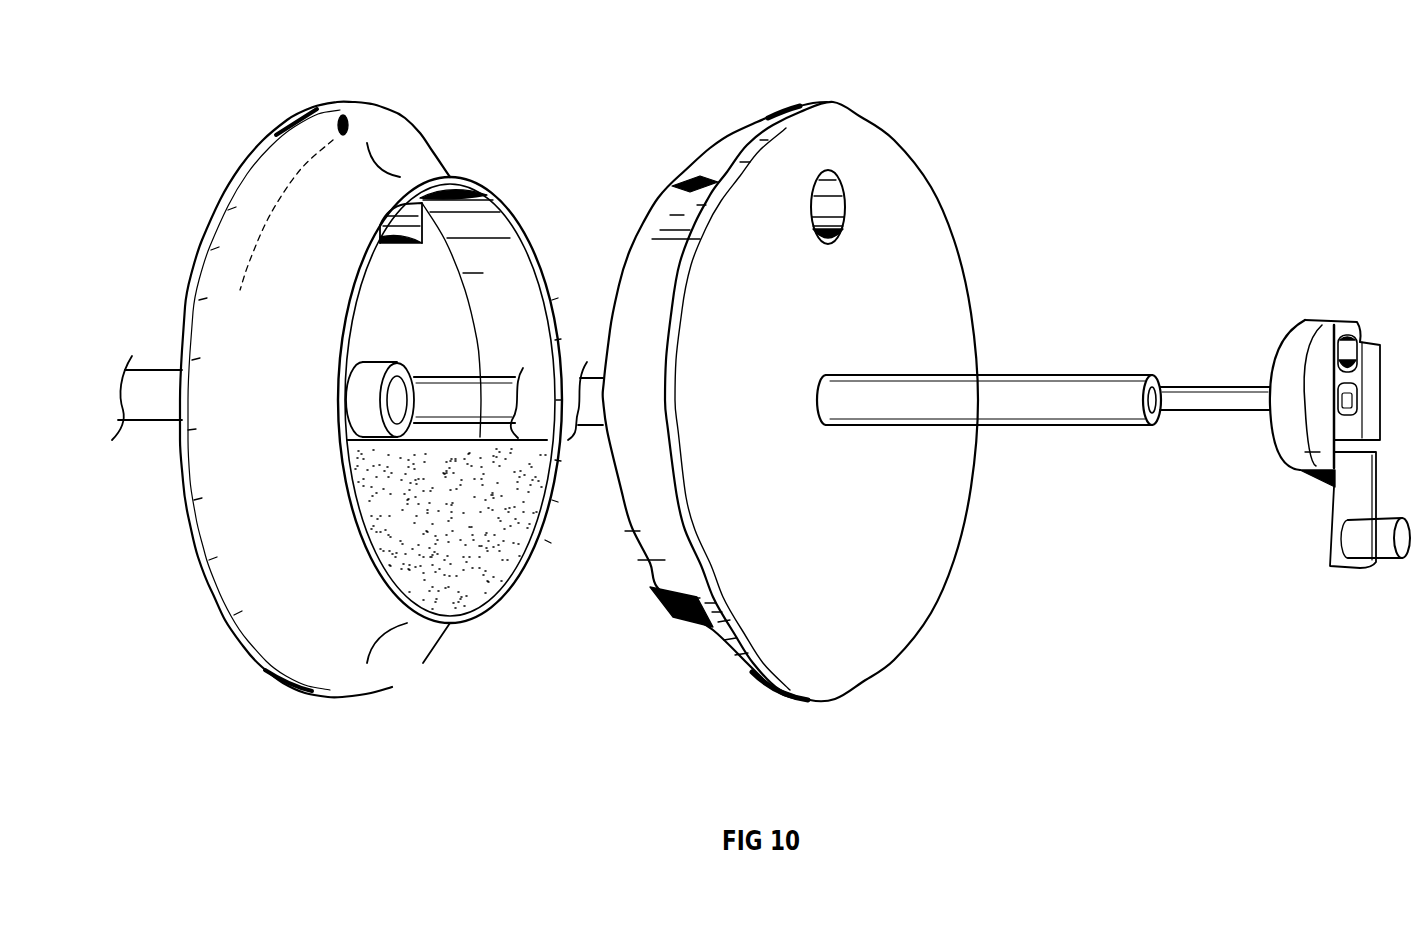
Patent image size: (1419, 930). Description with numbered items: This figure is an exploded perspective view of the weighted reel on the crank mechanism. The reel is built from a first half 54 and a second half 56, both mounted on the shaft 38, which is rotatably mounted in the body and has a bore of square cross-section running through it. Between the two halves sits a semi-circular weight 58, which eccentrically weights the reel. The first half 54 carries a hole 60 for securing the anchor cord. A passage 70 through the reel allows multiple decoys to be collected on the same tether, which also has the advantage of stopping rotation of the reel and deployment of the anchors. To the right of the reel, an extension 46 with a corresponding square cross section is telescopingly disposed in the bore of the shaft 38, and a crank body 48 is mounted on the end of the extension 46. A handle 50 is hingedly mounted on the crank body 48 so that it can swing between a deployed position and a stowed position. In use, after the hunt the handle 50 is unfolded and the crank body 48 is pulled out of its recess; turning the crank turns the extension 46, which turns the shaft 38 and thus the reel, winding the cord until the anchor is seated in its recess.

The shaft 38 is at (1015, 395).
The extension 46 is at (1228, 397).
The crank body 48 is at (1292, 443).
The handle 50 is at (1322, 512).
The first half 54 is at (342, 638).
The second half 56 is at (890, 590).
The semi-circular weight 58 is at (450, 560).
The hole 60 is at (347, 123).
The passage 70 is at (423, 205).